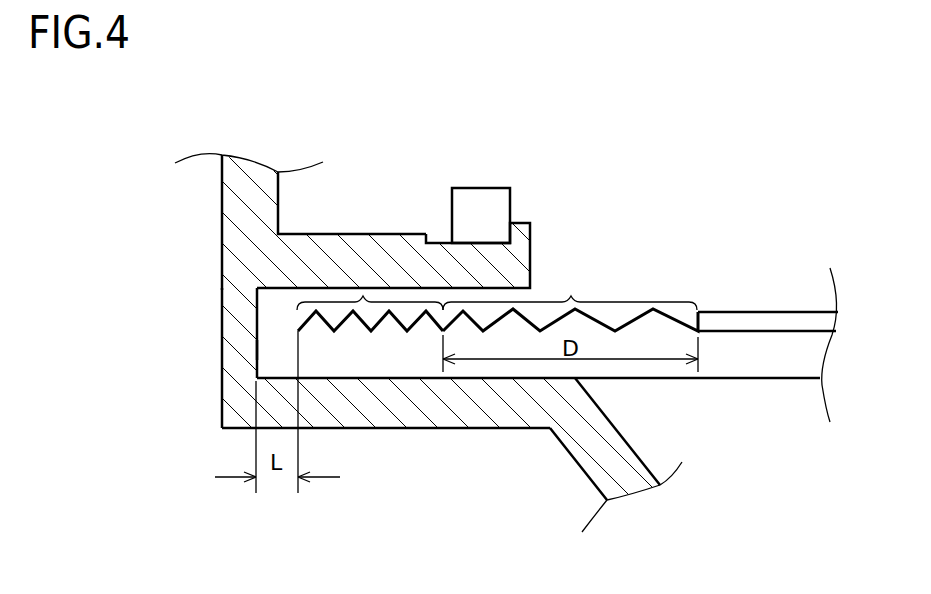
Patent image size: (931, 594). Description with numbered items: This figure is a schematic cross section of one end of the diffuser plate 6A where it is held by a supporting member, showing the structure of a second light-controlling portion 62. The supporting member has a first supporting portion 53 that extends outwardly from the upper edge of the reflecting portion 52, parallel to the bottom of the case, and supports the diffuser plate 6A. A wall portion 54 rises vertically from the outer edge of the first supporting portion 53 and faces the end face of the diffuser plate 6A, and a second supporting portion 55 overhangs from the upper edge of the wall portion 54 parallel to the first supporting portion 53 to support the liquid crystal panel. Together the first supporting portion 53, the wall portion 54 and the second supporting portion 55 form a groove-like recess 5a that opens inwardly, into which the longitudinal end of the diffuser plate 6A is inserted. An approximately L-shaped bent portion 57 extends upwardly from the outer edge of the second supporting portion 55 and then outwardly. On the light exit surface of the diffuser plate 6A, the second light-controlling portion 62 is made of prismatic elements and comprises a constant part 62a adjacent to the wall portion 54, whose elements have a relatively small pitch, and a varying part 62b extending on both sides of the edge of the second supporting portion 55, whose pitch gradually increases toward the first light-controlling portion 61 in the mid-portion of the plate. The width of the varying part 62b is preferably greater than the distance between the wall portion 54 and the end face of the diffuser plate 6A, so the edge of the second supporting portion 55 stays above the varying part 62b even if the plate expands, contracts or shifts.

The bent portion 57 is at (245, 205).
The wall portion 54 is at (240, 327).
The recess 5a is at (272, 349).
The second supporting portion 55 is at (355, 257).
The first supporting portion 53 is at (383, 400).
The reflecting portion 52 is at (600, 468).
The second light-controlling portion 62 is at (497, 220).
The constant part 62a is at (363, 297).
The varying part 62b is at (571, 302).
The first light-controlling portion 61 is at (772, 322).
The diffuser plate 6A is at (755, 378).